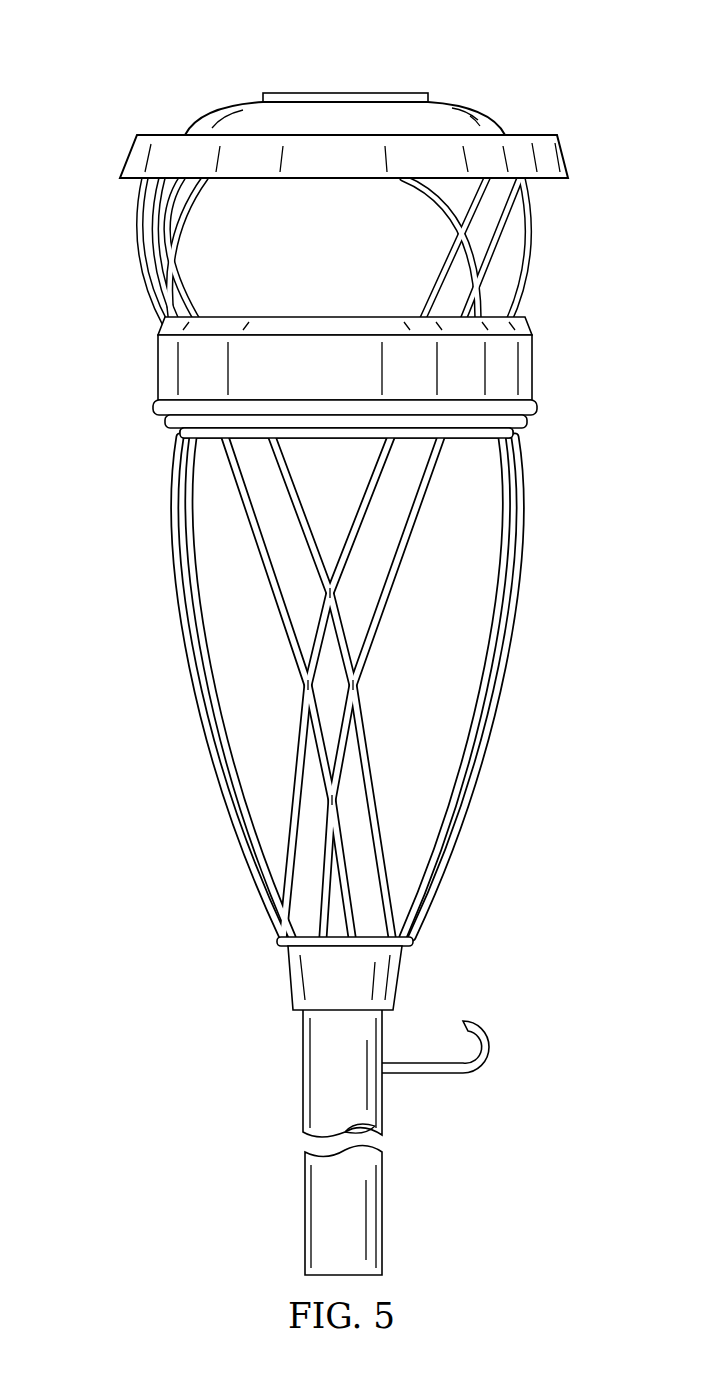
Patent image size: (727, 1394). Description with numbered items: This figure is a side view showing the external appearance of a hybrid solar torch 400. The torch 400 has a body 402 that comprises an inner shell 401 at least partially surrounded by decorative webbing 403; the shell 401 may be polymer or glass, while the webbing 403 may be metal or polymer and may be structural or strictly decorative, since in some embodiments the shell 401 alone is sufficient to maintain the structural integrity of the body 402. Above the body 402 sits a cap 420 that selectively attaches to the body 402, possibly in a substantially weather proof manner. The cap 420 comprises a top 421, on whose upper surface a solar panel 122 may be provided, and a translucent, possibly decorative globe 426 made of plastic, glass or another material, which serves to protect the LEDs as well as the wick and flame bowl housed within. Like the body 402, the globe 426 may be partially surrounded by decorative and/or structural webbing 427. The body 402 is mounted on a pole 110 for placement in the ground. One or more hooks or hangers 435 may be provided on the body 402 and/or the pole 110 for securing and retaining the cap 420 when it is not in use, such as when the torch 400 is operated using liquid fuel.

The torch 400 is at (502, 63).
The solar panel 122 is at (327, 95).
The top 421 is at (561, 153).
The globe 426 is at (365, 258).
The webbing 427 is at (522, 258).
The cap 420 is at (104, 93).
The body 402 is at (104, 420).
The decorative webbing 403 is at (513, 638).
The inner shell 401 is at (452, 758).
The hooks or hangers 435 is at (427, 1077).
The pole 110 is at (303, 1214).